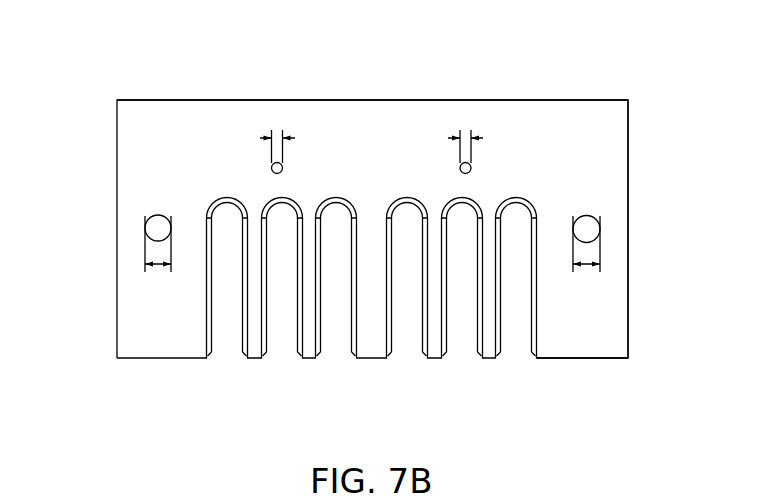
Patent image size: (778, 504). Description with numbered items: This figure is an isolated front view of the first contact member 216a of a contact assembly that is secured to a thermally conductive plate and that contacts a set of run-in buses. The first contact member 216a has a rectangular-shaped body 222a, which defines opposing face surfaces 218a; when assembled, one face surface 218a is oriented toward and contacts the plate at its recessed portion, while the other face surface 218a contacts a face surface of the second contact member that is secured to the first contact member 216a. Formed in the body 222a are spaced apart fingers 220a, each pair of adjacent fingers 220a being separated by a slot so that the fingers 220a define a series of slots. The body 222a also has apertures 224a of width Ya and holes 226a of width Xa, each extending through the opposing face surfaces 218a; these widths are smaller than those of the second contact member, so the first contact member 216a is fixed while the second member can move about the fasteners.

The first contact member 216a is at (640, 99).
The face surface 218a is at (535, 113).
The fingers 220a is at (488, 352).
The body 222a is at (590, 157).
The apertures 224a is at (447, 168).
The holes 226a is at (139, 229).